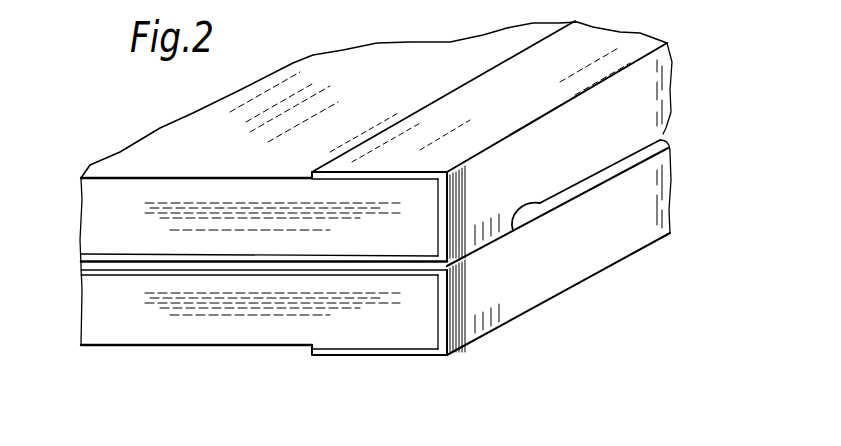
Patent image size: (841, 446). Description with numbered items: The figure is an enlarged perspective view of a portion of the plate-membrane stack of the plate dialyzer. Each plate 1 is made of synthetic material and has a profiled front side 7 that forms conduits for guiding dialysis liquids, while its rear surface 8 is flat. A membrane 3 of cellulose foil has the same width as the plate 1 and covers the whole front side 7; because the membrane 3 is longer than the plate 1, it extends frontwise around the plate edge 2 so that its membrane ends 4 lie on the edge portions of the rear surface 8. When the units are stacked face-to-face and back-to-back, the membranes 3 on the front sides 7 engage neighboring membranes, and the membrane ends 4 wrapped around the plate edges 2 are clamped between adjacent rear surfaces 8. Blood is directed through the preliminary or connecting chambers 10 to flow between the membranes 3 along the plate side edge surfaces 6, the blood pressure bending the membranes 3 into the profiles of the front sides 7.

The plate 1 is at (100, 223).
The plate edge 2 is at (340, 210).
The membrane 3 is at (193, 257).
The membrane end 4 is at (410, 133).
The plate side edge surface 6 is at (437, 217).
The profiled front side 7 is at (143, 253).
The rear surface 8 is at (308, 73).
The connecting chamber 10 is at (617, 167).